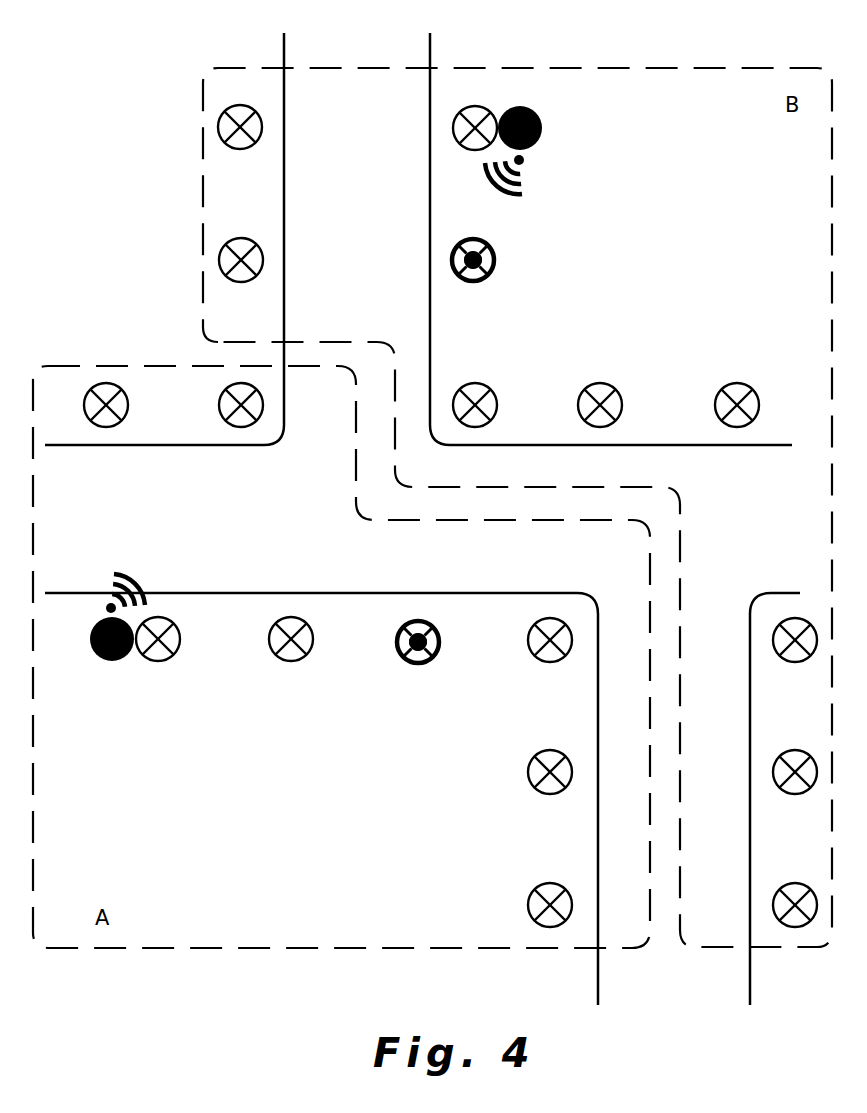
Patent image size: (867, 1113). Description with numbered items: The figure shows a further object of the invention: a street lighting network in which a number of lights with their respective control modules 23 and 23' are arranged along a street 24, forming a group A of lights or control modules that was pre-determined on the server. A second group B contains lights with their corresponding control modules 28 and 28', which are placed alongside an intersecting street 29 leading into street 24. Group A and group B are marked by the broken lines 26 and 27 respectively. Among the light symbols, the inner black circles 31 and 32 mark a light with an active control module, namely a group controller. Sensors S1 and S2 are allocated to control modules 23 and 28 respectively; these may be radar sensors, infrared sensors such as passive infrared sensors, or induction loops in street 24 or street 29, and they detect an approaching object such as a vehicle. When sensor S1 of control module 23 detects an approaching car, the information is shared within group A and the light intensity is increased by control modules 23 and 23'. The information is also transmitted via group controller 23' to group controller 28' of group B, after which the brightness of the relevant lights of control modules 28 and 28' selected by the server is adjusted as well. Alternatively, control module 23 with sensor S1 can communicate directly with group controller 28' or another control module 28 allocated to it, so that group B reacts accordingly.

The control module 23 is at (436, 630).
The control module 23' is at (433, 663).
The street 24 is at (213, 542).
The broken line 26 is at (333, 948).
The broken line 27 is at (370, 65).
The control module 28 is at (488, 266).
The control module 28' is at (490, 278).
The intersecting street 29 is at (371, 235).
The inner black circle 31 is at (407, 640).
The inner black circle 32 is at (483, 257).
The sensor S1 is at (117, 617).
The sensor S2 is at (513, 150).